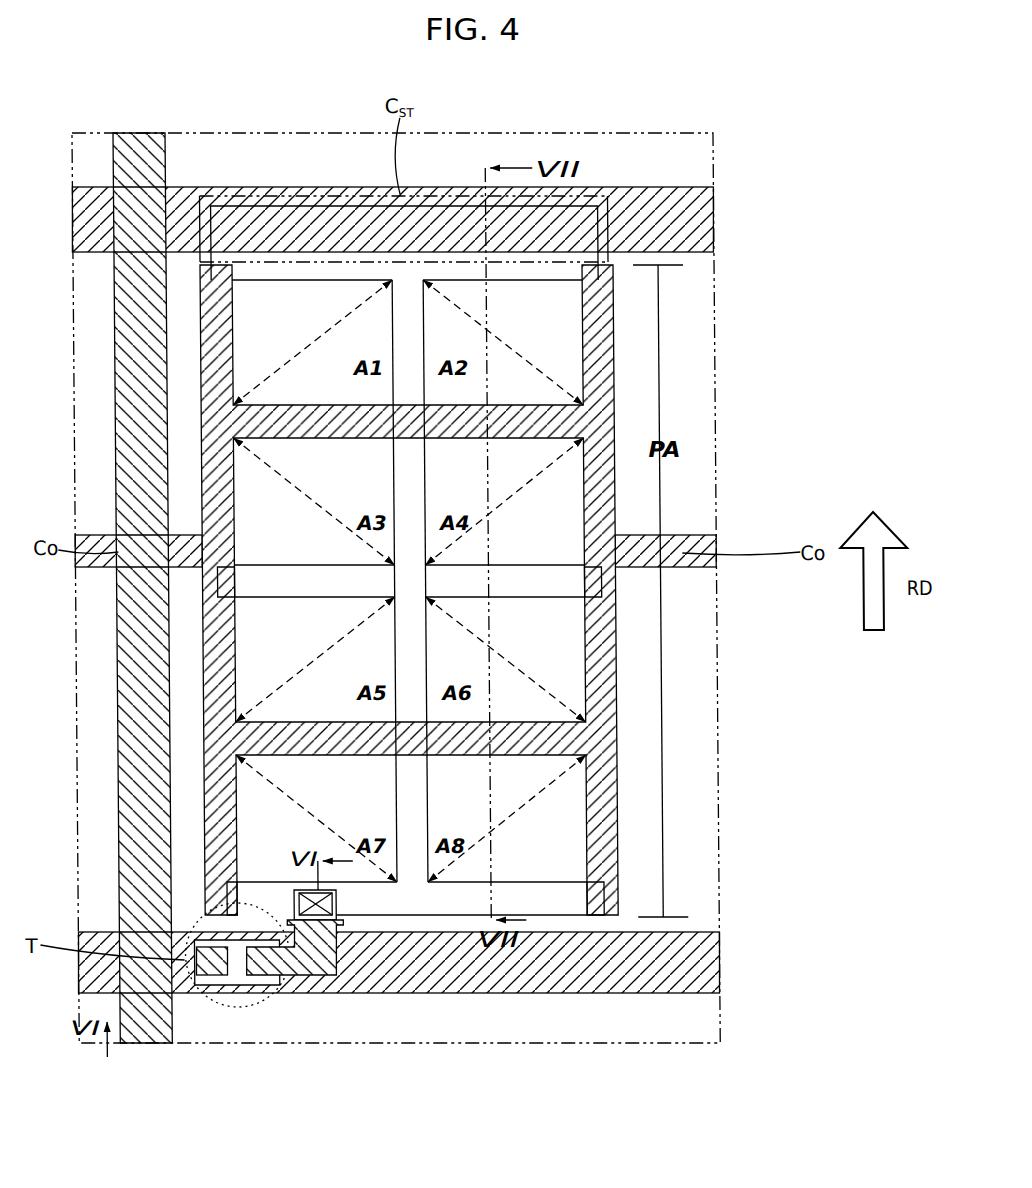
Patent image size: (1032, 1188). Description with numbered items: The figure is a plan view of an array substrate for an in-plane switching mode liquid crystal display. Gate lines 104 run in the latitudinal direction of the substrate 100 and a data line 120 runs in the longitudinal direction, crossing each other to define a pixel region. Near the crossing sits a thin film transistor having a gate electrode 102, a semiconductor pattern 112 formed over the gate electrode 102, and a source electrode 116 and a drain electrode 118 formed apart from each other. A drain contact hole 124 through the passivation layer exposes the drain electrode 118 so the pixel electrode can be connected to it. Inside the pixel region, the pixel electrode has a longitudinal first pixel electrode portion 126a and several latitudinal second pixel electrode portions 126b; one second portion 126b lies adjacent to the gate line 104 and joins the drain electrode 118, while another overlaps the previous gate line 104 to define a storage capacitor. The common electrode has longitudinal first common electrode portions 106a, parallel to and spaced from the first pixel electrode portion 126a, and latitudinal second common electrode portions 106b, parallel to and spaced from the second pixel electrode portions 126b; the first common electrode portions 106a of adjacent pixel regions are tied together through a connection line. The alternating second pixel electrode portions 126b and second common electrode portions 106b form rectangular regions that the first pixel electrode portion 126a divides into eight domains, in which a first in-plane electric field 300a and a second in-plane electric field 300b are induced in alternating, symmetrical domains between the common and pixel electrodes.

The substrate 100 is at (693, 1035).
The gate electrode 102 is at (231, 1008).
The gate lines 104 is at (738, 187).
The first common electrode portions 106a is at (611, 690).
The second common electrode portions 106b is at (507, 737).
The semiconductor pattern 112 is at (186, 986).
The source electrode 116 is at (186, 978).
The drain electrode 118 is at (294, 977).
The data line 120 is at (165, 95).
The drain contact hole 124 is at (334, 903).
The first pixel electrode portion 126a is at (410, 620).
The second pixel electrode portions 126b is at (538, 283).
The first in-plane electric field 300a is at (304, 346).
The second in-plane electric field 300b is at (318, 505).